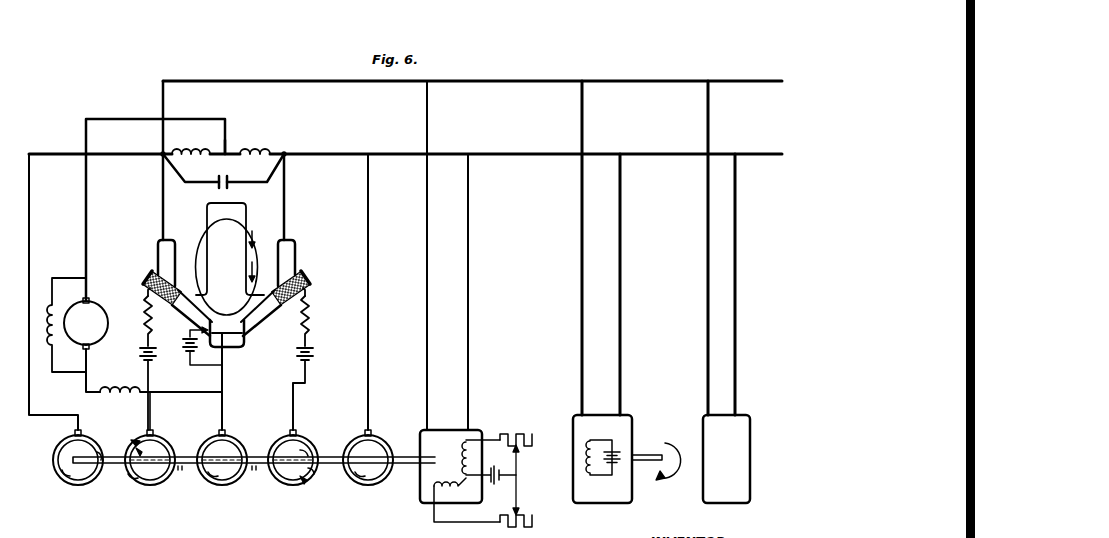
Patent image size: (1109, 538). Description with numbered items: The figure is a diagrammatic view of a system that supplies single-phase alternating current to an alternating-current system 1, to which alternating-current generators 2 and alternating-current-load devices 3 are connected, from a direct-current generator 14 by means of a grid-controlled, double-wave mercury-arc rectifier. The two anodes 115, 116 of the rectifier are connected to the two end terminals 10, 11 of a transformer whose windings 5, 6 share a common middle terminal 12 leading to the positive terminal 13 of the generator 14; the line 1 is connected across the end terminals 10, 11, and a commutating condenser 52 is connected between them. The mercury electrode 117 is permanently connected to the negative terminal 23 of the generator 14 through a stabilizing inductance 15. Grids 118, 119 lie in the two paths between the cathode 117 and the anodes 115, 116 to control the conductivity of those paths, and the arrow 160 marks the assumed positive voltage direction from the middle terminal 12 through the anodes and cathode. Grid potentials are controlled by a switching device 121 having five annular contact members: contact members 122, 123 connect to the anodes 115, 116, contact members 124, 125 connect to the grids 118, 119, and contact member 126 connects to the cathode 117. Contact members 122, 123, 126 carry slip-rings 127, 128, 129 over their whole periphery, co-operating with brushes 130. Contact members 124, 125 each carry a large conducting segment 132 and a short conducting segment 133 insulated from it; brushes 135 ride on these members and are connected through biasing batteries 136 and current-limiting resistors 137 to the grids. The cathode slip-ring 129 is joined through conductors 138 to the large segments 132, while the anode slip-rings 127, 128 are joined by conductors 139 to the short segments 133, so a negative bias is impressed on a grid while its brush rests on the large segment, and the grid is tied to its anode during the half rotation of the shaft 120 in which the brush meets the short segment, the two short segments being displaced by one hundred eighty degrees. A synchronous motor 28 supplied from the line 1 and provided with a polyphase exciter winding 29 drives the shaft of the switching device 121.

The alternating-current system 1 is at (497, 84).
The alternating-current generator 2 is at (742, 422).
The alternating-current-load device 3 is at (621, 420).
The transformer winding 5 is at (193, 151).
The transformer winding 6 is at (257, 151).
The end terminal 10 is at (160, 160).
The end terminal 11 is at (287, 152).
The common middle terminal 12 is at (227, 152).
The positive terminal 13 is at (88, 278).
The direct-current generator 14 is at (97, 306).
The stabilizing inductance 15 is at (108, 397).
The negative terminal 23 is at (88, 374).
The synchronous motor 28 is at (458, 436).
The two-phase exciting winding 29 is at (488, 444).
The commutating condenser 52 is at (227, 183).
The anode 115 is at (170, 238).
The anode 116 is at (290, 238).
The mercury electrode 117 is at (228, 346).
The grid 118 is at (162, 304).
The grid 119 is at (286, 304).
The shaft 120 is at (408, 466).
The switching device 121 is at (418, 431).
The contact member 122 is at (66, 480).
The contact member 123 is at (390, 480).
The contact member 124 is at (160, 482).
The contact member 125 is at (284, 482).
The contact member 126 is at (218, 482).
The slip-ring 127 is at (90, 482).
The slip-ring 128 is at (356, 482).
The slip-ring 129 is at (212, 488).
The brush 130 is at (74, 434).
The large conducting segment 132 is at (128, 480).
The short conducting segment 133 is at (134, 438).
The brush 135 is at (155, 433).
The biasing battery 136 is at (153, 362).
The current-limiting resistor 137 is at (148, 316).
The conductor 138 is at (182, 470).
The conductor 139 is at (99, 458).
The arrow 160 is at (240, 214).